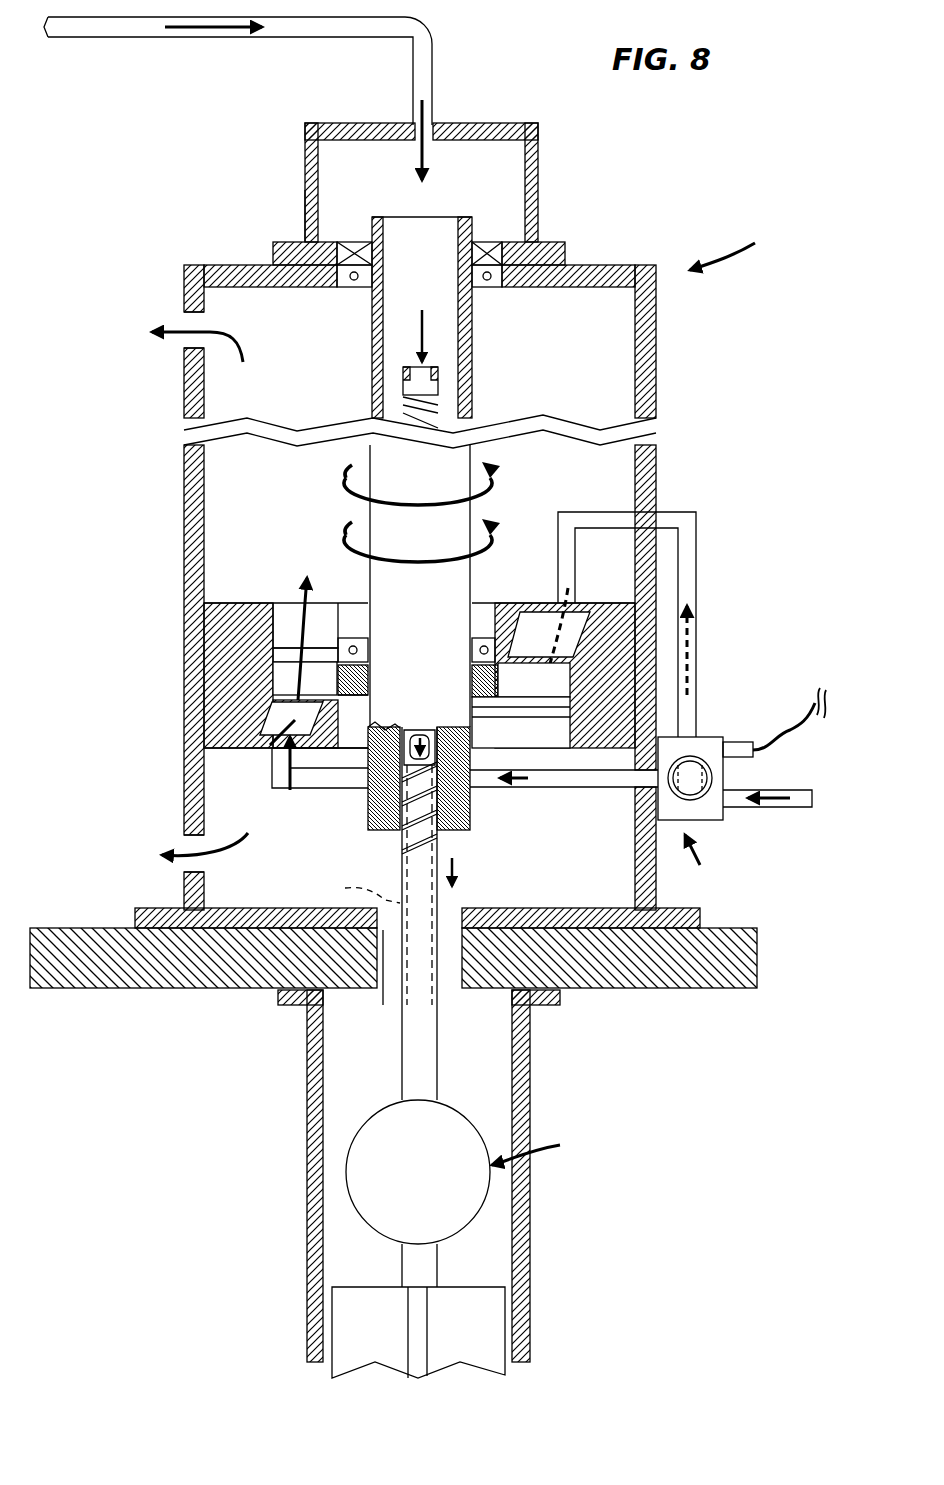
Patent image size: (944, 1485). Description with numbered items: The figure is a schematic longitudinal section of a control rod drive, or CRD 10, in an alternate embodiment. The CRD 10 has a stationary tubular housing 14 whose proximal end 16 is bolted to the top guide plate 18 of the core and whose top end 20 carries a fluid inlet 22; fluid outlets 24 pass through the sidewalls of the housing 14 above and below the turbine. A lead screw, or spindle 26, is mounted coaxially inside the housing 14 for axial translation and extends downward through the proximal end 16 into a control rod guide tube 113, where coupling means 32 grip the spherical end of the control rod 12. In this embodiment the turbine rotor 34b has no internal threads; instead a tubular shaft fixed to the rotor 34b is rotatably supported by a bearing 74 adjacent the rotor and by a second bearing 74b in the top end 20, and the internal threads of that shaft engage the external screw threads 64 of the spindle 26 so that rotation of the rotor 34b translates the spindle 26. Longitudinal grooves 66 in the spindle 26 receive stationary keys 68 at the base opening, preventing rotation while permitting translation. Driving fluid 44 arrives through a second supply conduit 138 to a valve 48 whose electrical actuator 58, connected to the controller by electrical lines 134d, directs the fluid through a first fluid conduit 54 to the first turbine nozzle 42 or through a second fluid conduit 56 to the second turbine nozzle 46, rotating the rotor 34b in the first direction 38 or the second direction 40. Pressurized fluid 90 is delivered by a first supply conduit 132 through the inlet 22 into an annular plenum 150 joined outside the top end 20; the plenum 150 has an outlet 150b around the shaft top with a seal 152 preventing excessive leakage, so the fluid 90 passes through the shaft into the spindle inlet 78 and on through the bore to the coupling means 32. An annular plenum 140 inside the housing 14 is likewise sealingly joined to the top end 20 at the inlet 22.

The control rod drive 10 is at (722, 242).
The control rod 12 is at (490, 1310).
The housing 14 is at (184, 460).
The proximal end 16 is at (675, 893).
The top guide plate 18 is at (750, 945).
The top end 20 is at (575, 265).
The fluid inlet 22 is at (435, 165).
The fluid outlets 24 is at (184, 320).
The spindle 26 is at (398, 866).
The coupling means 32 is at (466, 1172).
The turbine rotor 34b is at (285, 672).
The first direction 38 is at (490, 478).
The second direction 40 is at (490, 535).
The first turbine nozzle 42 is at (270, 735).
The driving fluid 44 is at (230, 843).
The second turbine nozzle 46 is at (555, 612).
The valve 48 is at (697, 807).
The first fluid conduit 54 is at (480, 790).
The second fluid conduit 56 is at (696, 537).
The electrical actuator 58 is at (735, 742).
The external screw threads 64 is at (458, 858).
The grooves 66 is at (359, 888).
The stationary keys 68 is at (385, 990).
The bearing 74 is at (345, 640).
The second bearing 74b is at (360, 287).
The inlet 78 is at (440, 365).
The pressurized fluid 90 is at (205, 37).
The control rod guide tube 113 is at (530, 1105).
The first supply conduit 132 is at (125, 37).
The electrical lines 134d is at (810, 700).
The second supply conduit 138 is at (808, 812).
The annular plenum 140 is at (372, 368).
The annular plenum 150 is at (538, 175).
The outlet 150b is at (318, 242).
The seal 152 is at (538, 242).